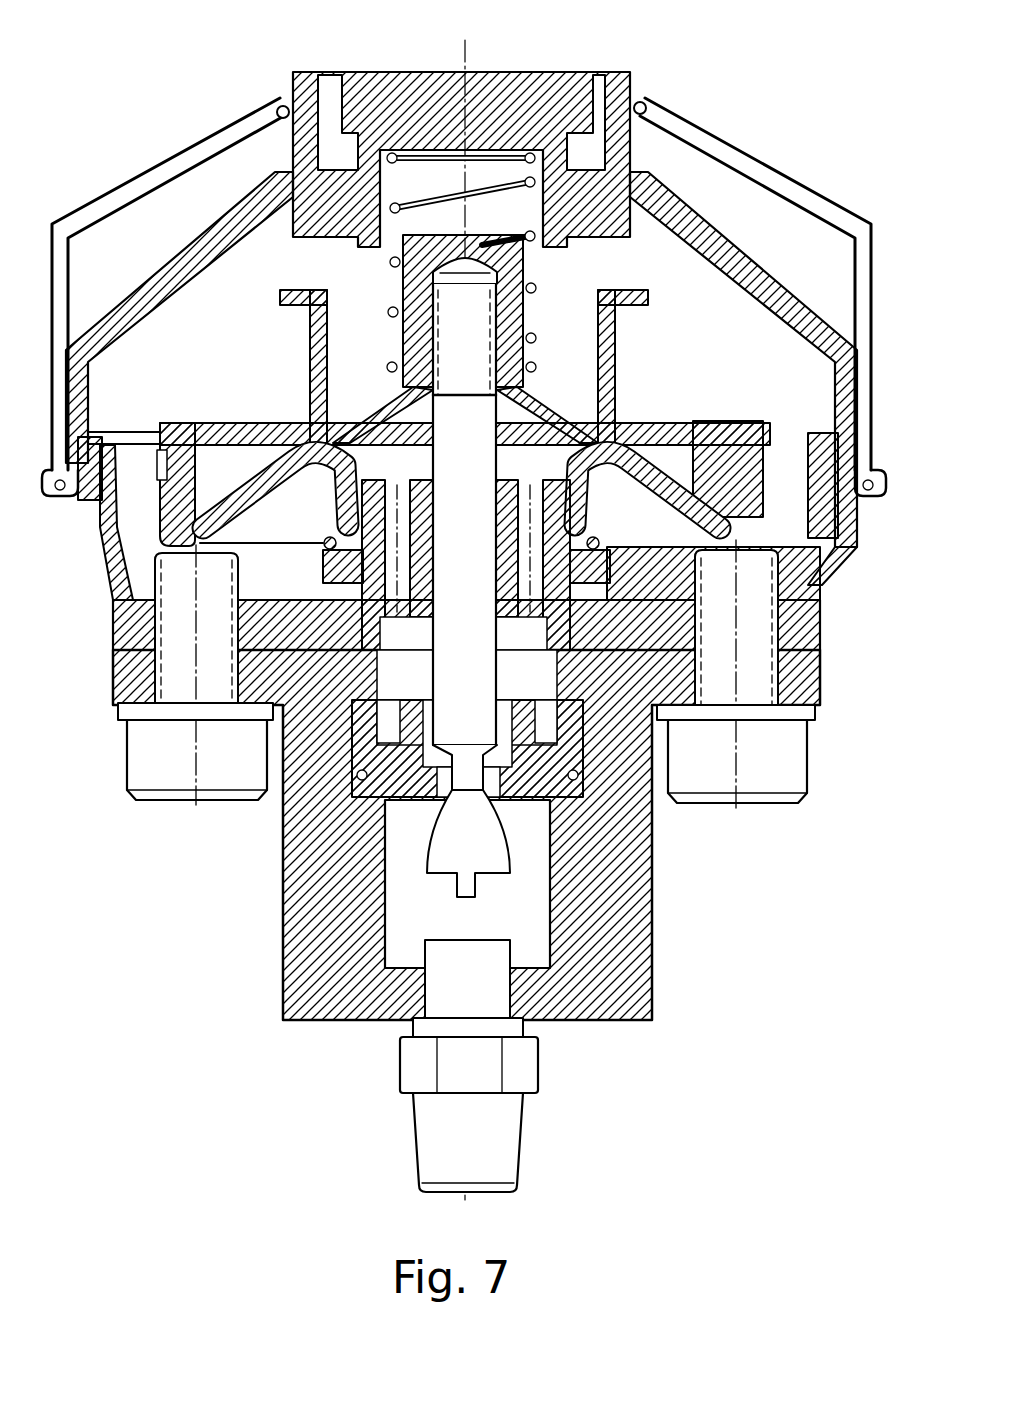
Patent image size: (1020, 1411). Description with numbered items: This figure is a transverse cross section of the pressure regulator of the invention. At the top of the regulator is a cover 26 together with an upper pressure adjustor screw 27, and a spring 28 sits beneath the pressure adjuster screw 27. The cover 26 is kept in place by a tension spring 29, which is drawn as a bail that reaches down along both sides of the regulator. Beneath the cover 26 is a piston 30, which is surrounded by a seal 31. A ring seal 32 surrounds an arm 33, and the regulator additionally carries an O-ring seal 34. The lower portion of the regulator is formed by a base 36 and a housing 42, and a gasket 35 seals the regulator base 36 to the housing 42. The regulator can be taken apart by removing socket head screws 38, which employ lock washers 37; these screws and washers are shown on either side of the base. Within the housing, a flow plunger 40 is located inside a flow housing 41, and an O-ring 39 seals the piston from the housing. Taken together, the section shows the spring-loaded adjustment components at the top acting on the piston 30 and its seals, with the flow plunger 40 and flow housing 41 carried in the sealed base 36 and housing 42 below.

The cover 26 is at (740, 238).
The upper pressure adjustor screw 27 is at (508, 72).
The spring 28 is at (412, 200).
The tension spring 29 is at (48, 270).
The piston 30 is at (615, 328).
The seal 31 is at (535, 580).
The ring seal 32 is at (162, 450).
The arm 33 is at (100, 543).
The O-ring seal 34 is at (326, 540).
The gasket 35 is at (113, 650).
The base 36 is at (822, 610).
The lock washers 37 is at (820, 716).
The socket head screws 38 is at (805, 800).
The O-ring 39 is at (600, 792).
The flow plunger 40 is at (520, 895).
The flow housing 41 is at (405, 835).
The housing 42 is at (283, 965).